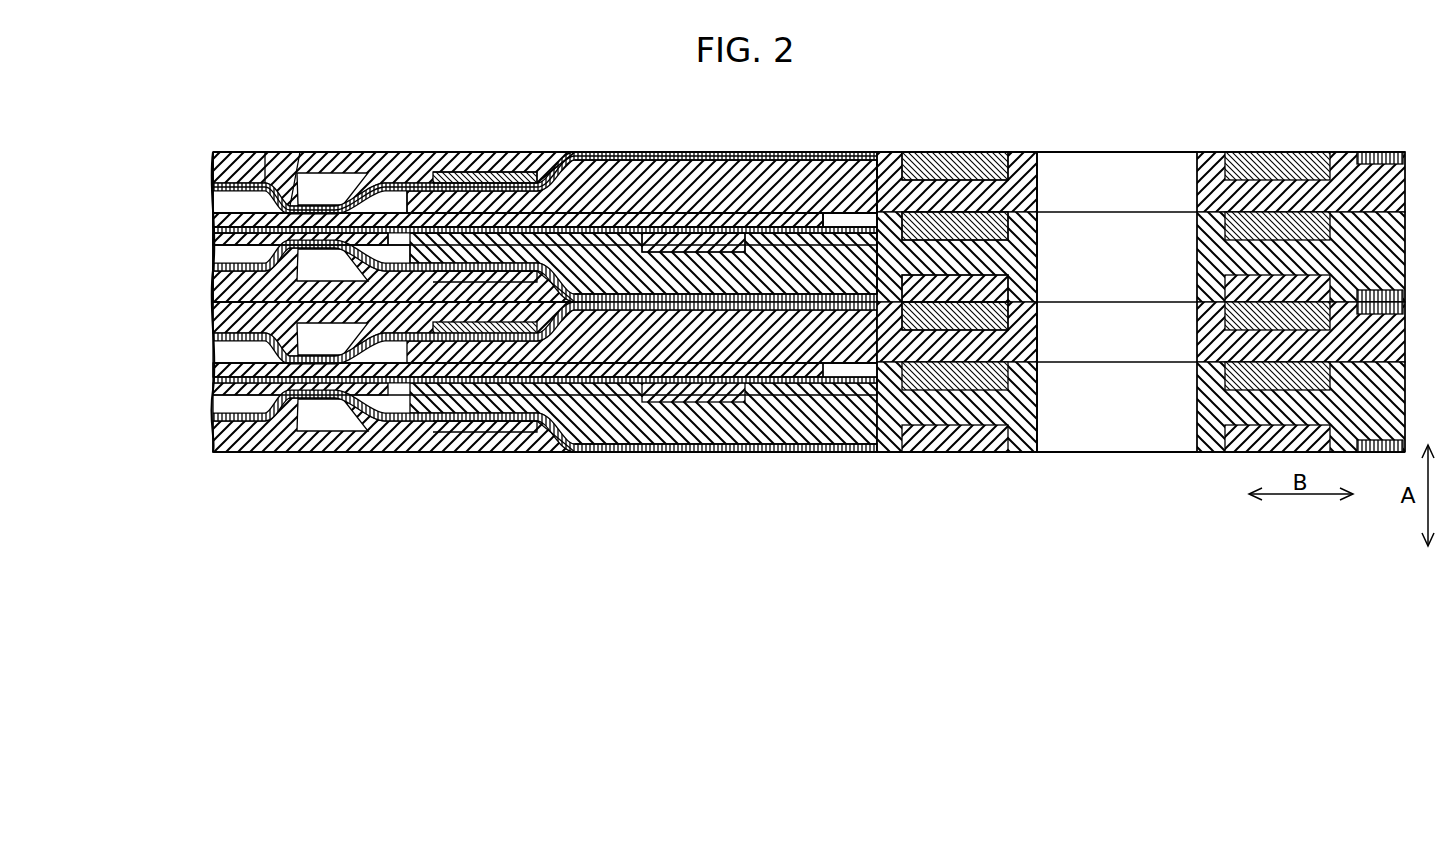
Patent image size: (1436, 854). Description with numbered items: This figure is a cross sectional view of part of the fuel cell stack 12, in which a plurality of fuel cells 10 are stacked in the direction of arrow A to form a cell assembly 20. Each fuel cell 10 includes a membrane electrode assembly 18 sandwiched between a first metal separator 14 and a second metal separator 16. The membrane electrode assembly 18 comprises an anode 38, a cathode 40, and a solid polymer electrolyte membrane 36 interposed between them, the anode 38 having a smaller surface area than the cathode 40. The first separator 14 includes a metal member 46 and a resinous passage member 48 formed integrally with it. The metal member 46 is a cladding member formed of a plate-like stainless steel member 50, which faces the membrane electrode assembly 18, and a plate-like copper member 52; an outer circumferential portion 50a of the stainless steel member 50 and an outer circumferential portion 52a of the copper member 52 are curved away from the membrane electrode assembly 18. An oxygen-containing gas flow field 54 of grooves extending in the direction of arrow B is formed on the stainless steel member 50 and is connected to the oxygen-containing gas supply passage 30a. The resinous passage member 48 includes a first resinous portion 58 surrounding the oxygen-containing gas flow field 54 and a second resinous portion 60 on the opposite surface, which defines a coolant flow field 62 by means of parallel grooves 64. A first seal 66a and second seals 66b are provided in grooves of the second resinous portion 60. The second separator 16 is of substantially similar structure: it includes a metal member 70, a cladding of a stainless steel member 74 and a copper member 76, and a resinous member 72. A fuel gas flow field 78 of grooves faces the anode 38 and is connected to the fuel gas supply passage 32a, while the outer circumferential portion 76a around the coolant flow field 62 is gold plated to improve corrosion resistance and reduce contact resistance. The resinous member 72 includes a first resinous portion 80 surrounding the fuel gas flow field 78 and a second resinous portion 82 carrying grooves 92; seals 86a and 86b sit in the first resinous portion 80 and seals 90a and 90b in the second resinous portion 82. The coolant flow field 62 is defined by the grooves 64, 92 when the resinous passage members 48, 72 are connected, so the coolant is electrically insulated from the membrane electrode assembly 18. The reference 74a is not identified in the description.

The fuel cell 10 is at (112, 160).
The fuel cell stack 12 is at (809, 302).
The first metal separator 14 is at (206, 178).
The second metal separator 16 is at (206, 293).
The membrane electrode assembly 18 is at (158, 196).
The cell assembly 20 is at (991, 81).
The oxygen-containing gas supply passage 30a is at (1121, 153).
The fuel gas supply passage 32a is at (1117, 302).
The solid polymer electrolyte membrane 36 is at (214, 230).
The anode 38 is at (214, 241).
The cathode 40 is at (214, 222).
The metal member 46 is at (667, 150).
The resinous passage member 48 is at (418, 151).
The stainless steel member 50 is at (378, 153).
The outer circumferential portion of the stainless steel member 50a is at (862, 156).
The copper member 52 is at (408, 156).
The outer circumferential portion of the copper member 52a is at (848, 156).
The oxygen-containing gas flow field 54 is at (236, 153).
The first resinous portion 58 is at (640, 185).
The second resinous portion 60 is at (262, 153).
The coolant flow field 62 is at (162, 320).
The grooves 64 is at (214, 354).
The first seal 66a is at (480, 187).
The second seal 66b is at (1010, 168).
The metal member 70 is at (897, 172).
The resinous member 72 is at (596, 180).
The stainless steel member 74 is at (558, 240).
The lower body portion 74a is at (793, 260).
The copper member 76 is at (522, 185).
The outer circumferential portion 76a is at (757, 240).
The fuel gas flow field 78 is at (214, 265).
The first resinous portion 80 is at (600, 441).
The second resinous portion 82 is at (398, 437).
The first seal 86a is at (697, 220).
The second seal 86b is at (1010, 232).
The first seal 90a is at (485, 440).
The second seal 90b is at (1010, 288).
The grooves 92 is at (214, 318).